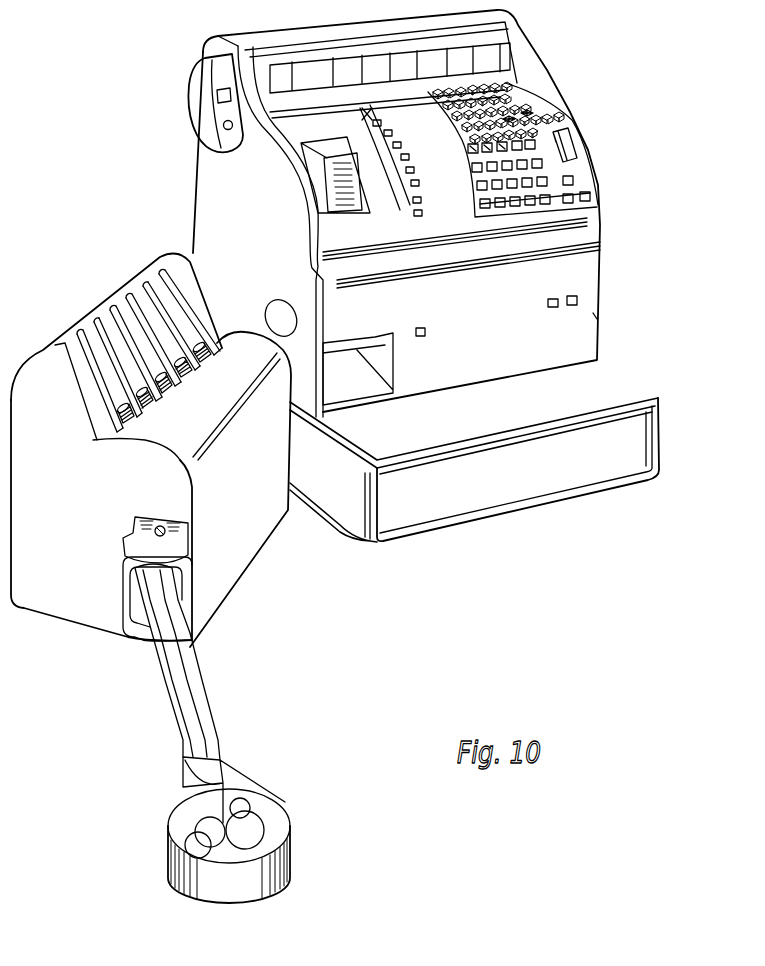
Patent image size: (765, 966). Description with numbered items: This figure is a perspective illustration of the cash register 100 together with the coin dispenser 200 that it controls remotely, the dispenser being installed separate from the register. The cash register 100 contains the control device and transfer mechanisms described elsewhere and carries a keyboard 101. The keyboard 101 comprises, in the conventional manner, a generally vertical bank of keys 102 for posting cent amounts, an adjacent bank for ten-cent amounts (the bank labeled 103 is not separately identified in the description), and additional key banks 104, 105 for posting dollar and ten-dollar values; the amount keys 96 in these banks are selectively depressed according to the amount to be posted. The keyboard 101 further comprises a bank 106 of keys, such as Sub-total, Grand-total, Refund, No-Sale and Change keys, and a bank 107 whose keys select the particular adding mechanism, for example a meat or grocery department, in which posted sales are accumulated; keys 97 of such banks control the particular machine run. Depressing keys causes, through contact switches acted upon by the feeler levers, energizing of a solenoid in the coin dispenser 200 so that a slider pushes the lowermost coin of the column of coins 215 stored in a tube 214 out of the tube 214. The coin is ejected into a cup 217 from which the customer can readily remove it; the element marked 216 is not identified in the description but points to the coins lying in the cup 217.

The cash register 100 is at (202, 217).
The keyboard 101 is at (511, 102).
The keys 96 is at (528, 112).
The keys 97 is at (537, 146).
The bank 107 is at (578, 150).
The bank of keys 106 is at (576, 200).
The bank of keys 102 is at (520, 213).
The key 103 is at (523, 209).
The key bank 104 is at (503, 208).
The key bank 105 is at (487, 208).
The coin dispenser 200 is at (72, 607).
The tube 214 is at (86, 322).
The column of coins 215 is at (162, 413).
The cup 217 is at (247, 790).
The coins 216 is at (252, 835).